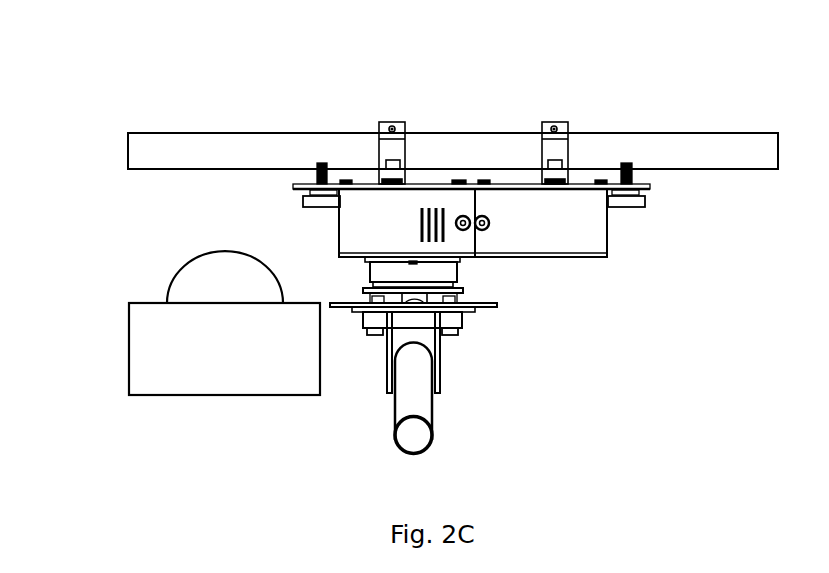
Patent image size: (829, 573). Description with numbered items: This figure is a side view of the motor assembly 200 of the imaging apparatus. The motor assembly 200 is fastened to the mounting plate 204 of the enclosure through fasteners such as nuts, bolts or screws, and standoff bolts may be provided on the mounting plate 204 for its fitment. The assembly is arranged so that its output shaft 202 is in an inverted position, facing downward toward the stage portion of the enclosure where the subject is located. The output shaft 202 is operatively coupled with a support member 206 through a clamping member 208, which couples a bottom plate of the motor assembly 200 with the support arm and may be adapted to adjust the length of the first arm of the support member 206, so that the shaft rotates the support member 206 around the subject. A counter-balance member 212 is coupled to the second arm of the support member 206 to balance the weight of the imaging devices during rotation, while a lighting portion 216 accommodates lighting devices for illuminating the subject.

The motor assembly 200 is at (155, 62).
The output shaft 202 is at (365, 273).
The mounting plate 204 is at (293, 188).
The support member 206 is at (395, 412).
The clamping member 208 is at (510, 312).
The counter-balance member 212 is at (135, 363).
The lighting portion 216 is at (465, 292).